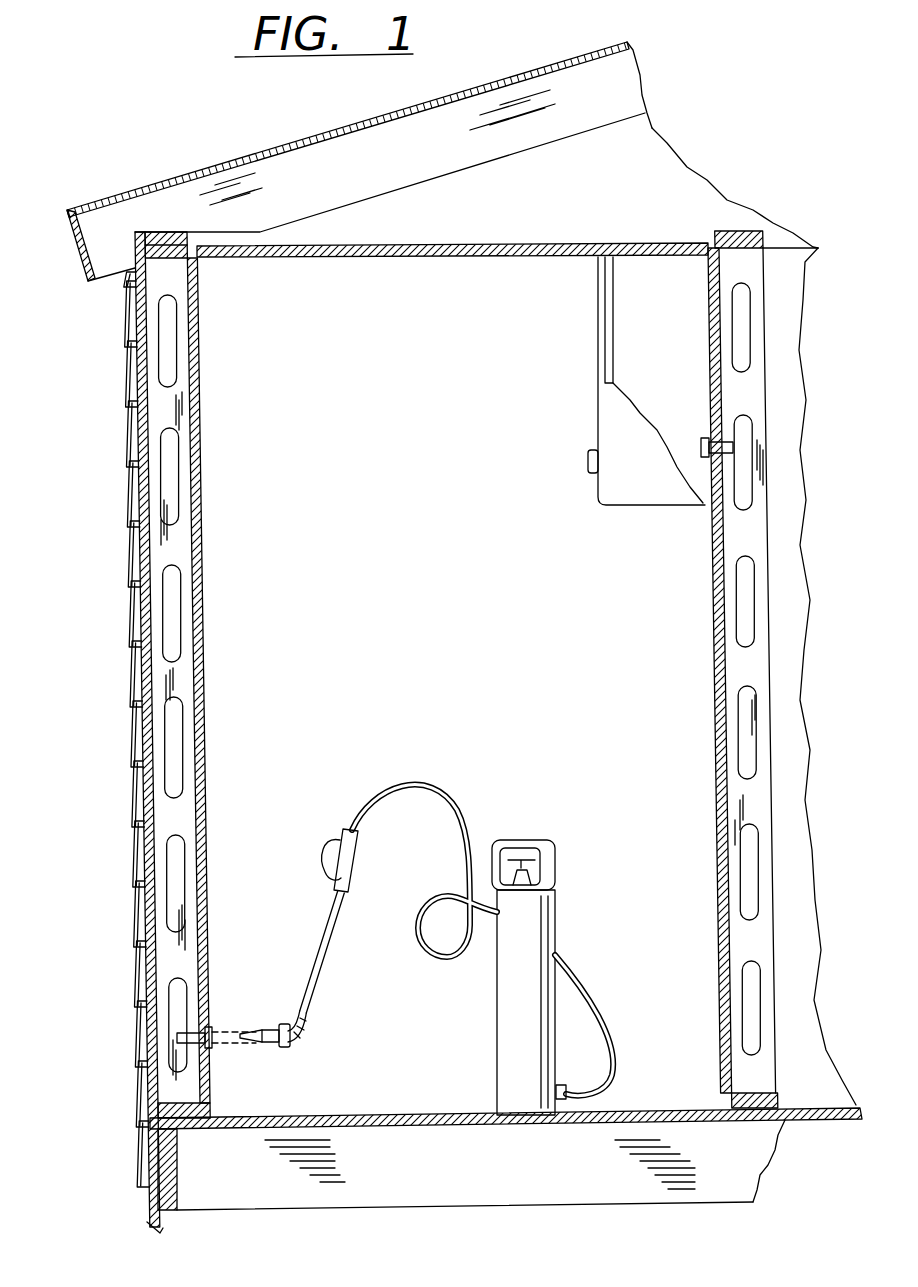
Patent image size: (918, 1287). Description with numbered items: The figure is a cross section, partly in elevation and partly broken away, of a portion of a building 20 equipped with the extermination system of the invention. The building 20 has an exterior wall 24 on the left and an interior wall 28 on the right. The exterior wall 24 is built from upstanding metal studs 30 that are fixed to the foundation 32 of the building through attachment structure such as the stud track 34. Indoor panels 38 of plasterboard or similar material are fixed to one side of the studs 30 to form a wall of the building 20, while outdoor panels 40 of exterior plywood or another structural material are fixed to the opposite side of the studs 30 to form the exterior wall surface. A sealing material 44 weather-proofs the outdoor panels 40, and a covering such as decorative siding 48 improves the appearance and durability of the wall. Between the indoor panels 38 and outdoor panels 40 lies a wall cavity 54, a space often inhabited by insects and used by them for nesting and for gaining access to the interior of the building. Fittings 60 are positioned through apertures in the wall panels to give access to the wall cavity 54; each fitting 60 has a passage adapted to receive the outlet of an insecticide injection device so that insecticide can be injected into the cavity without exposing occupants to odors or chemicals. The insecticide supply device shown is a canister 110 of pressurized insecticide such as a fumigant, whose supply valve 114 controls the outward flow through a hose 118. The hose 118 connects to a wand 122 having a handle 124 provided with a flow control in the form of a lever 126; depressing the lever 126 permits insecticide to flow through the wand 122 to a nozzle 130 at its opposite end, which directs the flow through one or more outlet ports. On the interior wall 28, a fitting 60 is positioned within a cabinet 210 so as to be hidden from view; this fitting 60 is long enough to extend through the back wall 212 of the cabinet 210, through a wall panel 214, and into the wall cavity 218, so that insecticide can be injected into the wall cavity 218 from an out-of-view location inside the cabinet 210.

The building 20 is at (105, 198).
The exterior wall 24 is at (227, 732).
The interior wall 28 is at (745, 669).
The metal stud 30 is at (173, 513).
The foundation 32 is at (506, 1183).
The stud track 34 is at (208, 1097).
The indoor panels 38 is at (203, 777).
The outdoor panels 40 is at (130, 802).
The sealing material 44 is at (102, 729).
The decorative siding 48 is at (123, 585).
The wall cavity 54 is at (220, 687).
The fittings 60 is at (180, 1032).
The canister 110 is at (569, 952).
The supply valve 114 is at (528, 852).
The hose 118 is at (448, 808).
The wand 122 is at (326, 934).
The handle 124 is at (348, 872).
The lever 126 is at (327, 853).
The nozzle 130 is at (262, 1030).
The cabinet 210 is at (610, 381).
The back wall 212 is at (705, 295).
The post outer wall 214 is at (711, 620).
The wall cavity 218 is at (755, 530).